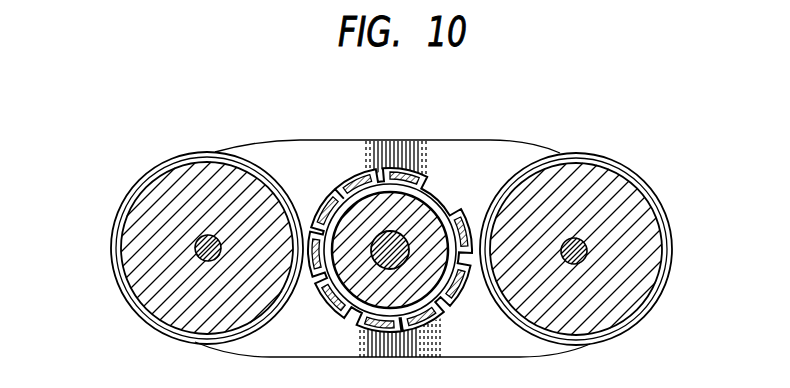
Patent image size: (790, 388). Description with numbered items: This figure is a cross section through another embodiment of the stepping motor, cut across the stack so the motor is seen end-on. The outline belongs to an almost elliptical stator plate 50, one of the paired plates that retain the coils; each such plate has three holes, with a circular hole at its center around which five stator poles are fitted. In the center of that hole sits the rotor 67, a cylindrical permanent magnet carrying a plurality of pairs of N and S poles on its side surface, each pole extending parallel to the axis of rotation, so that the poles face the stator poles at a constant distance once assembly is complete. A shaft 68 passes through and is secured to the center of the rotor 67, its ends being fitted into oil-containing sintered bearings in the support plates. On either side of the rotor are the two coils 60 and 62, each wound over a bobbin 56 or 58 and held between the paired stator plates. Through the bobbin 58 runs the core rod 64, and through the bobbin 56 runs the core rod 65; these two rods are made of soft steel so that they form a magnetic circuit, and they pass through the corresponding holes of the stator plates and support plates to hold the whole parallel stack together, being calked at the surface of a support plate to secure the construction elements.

The stator plate 50 is at (482, 140).
The bobbin 56 is at (662, 222).
The bobbin 58 is at (117, 220).
The coil 60 is at (660, 274).
The coil 62 is at (122, 248).
The core rod 64 is at (200, 259).
The core rod 65 is at (582, 262).
The rotor 67 is at (421, 170).
The shaft 68 is at (386, 231).